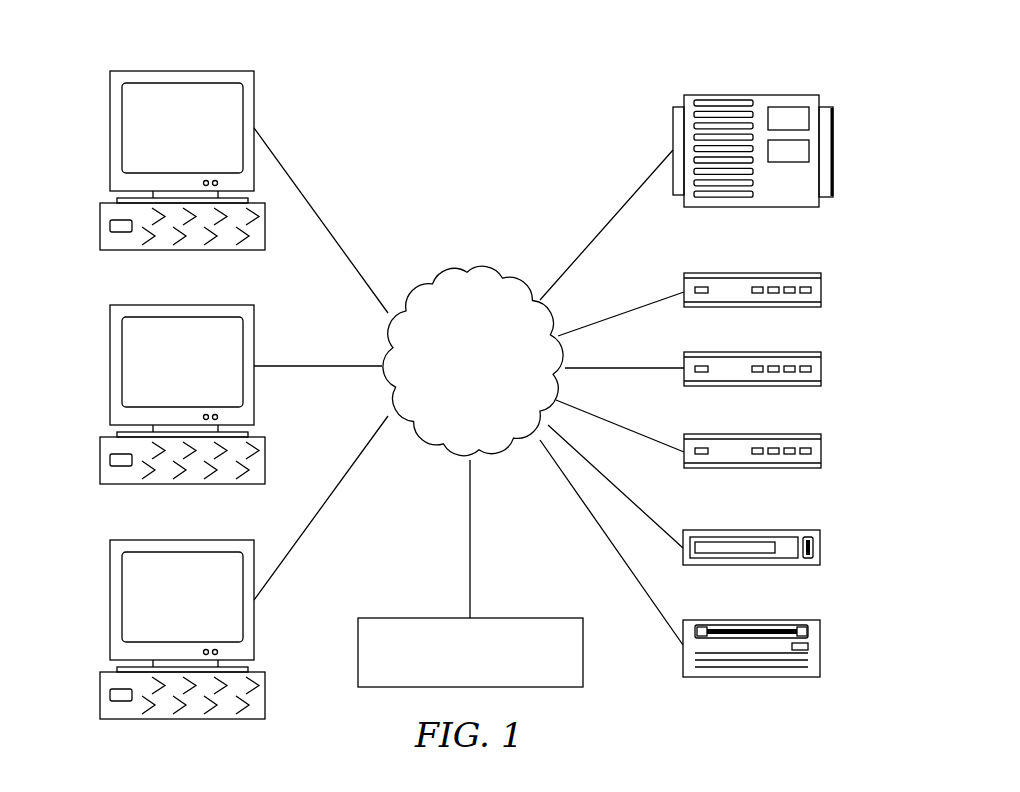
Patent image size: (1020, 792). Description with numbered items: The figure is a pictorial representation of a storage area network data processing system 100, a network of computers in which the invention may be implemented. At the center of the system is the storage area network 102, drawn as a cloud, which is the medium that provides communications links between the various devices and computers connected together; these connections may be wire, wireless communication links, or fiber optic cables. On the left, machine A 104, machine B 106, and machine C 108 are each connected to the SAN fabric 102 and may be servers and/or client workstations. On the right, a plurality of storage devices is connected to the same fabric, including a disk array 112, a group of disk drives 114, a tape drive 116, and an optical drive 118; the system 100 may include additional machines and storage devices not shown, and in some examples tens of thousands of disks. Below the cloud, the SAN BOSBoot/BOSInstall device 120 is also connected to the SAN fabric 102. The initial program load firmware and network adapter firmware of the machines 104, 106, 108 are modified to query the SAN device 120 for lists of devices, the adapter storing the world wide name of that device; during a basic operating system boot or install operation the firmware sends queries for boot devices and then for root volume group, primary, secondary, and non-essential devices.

The SAN data processing system 100 is at (575, 82).
The storage area network 102 is at (450, 405).
The machine A 104 is at (110, 132).
The machine B 106 is at (110, 366).
The machine C 108 is at (110, 600).
The disk array 112 is at (833, 150).
The disk drives 114 is at (837, 273).
The tape drive 116 is at (822, 548).
The optical drive 118 is at (822, 650).
The SAN BOSBoot/BOSInstall device 120 is at (424, 617).